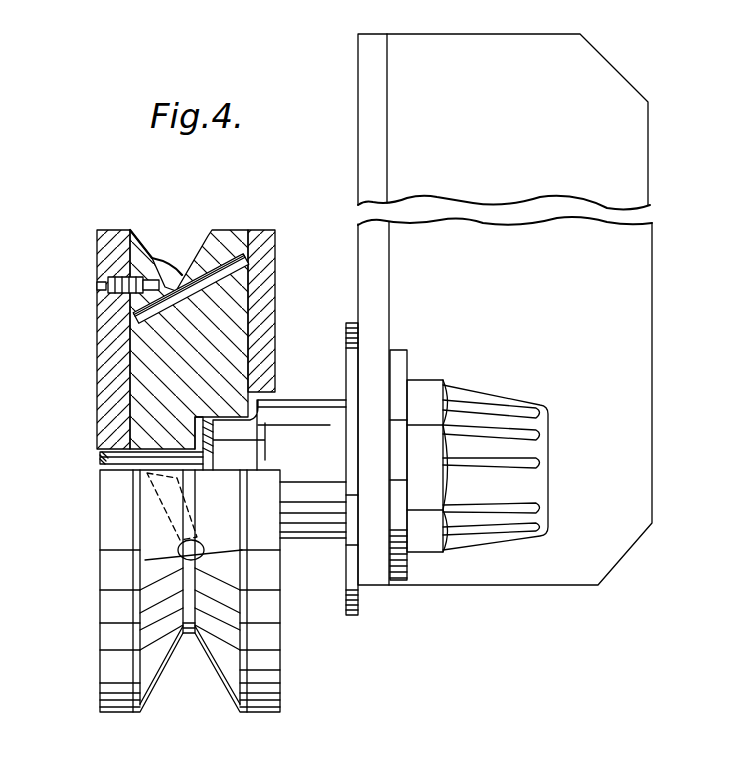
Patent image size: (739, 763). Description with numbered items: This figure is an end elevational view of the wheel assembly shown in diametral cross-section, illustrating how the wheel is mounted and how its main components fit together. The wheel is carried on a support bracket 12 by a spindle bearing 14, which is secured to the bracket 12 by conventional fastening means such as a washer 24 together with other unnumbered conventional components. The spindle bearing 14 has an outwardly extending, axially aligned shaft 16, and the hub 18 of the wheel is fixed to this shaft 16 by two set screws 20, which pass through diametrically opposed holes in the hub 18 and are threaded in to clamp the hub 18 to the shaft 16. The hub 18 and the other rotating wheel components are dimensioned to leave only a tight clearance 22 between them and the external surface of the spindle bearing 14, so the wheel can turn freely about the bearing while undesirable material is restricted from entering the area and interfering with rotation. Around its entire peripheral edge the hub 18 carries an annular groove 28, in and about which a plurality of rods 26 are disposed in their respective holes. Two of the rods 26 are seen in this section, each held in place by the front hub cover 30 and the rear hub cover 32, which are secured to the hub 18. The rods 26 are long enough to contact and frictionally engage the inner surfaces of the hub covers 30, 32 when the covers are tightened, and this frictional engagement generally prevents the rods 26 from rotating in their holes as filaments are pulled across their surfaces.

The support bracket 12 is at (634, 301).
The spindle bearing 14 is at (314, 553).
The shaft 16 is at (112, 470).
The hub 18 is at (235, 307).
The set screw 20 is at (197, 548).
The tight clearance 22 is at (273, 378).
The washer 24 is at (362, 618).
The rod 26 is at (208, 262).
The annular groove 28 is at (190, 657).
The front hub cover 30 is at (100, 371).
The rear hub cover 32 is at (274, 228).